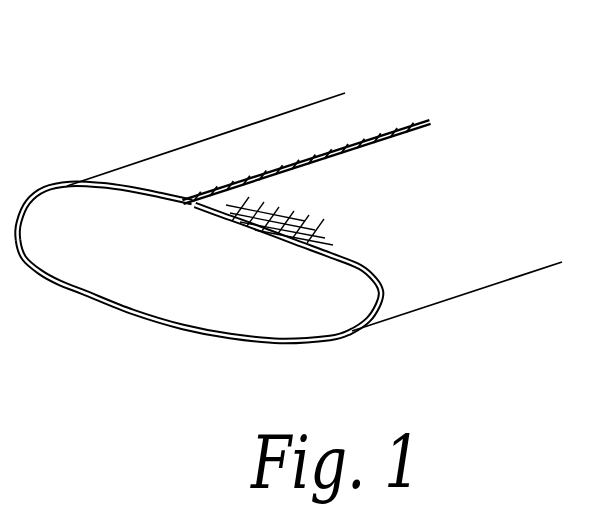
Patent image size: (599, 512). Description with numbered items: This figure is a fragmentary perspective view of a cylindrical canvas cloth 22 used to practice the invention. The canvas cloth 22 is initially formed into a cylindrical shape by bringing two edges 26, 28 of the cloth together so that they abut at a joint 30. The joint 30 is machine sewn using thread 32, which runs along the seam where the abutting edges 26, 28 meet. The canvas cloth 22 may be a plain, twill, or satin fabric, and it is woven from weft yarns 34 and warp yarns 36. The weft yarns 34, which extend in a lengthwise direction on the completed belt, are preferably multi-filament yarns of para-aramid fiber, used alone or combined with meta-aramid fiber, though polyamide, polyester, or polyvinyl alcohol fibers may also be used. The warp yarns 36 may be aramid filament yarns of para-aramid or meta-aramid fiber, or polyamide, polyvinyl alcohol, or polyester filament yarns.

The canvas cloth 22 is at (460, 263).
The edge 26 is at (192, 205).
The edge 28 is at (320, 158).
The joint 30 is at (440, 120).
The thread 32 is at (192, 200).
The weft yarns 34 is at (327, 227).
The warp yarns 36 is at (300, 213).